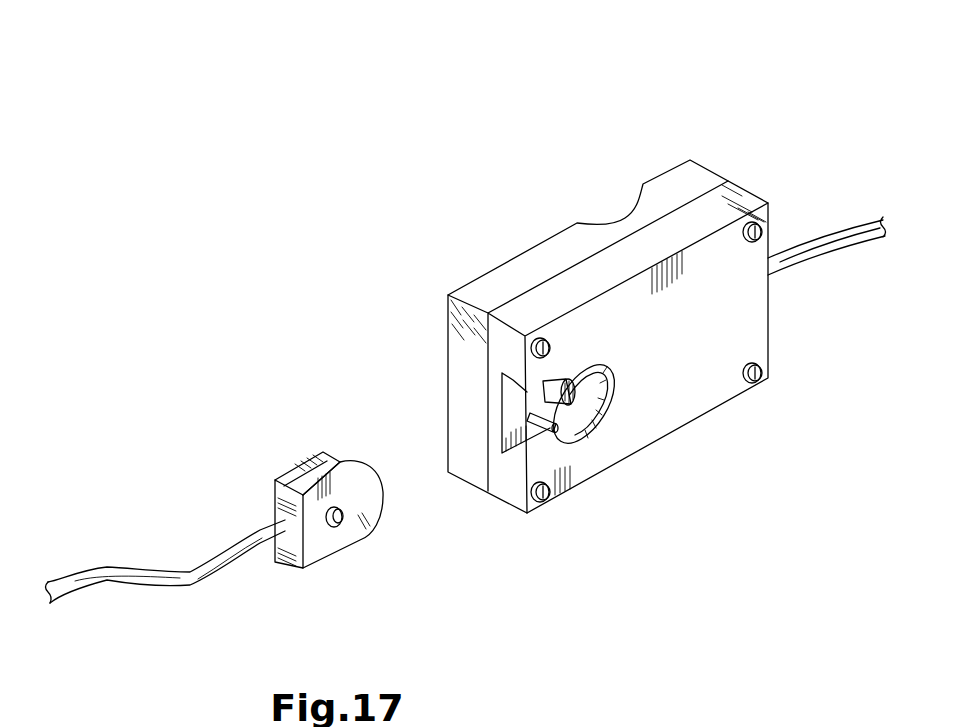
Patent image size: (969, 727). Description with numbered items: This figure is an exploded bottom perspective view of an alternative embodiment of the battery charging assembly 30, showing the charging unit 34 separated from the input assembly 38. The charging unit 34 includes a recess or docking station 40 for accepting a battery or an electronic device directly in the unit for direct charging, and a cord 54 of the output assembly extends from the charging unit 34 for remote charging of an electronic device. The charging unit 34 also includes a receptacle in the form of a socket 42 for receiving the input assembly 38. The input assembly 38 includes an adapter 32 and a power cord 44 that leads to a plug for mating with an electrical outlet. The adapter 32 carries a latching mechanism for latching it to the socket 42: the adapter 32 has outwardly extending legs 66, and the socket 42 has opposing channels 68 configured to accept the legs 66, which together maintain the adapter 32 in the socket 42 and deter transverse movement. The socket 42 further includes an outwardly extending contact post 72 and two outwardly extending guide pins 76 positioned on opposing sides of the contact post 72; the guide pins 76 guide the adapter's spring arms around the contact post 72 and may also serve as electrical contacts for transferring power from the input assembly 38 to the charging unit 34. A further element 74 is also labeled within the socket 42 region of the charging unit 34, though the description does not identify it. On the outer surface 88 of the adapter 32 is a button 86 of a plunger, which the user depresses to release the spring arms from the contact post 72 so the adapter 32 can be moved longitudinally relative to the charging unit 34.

The battery charging assembly 30 is at (622, 88).
The adapter 32 is at (362, 500).
The charging unit 34 is at (697, 384).
The input assembly 38 is at (213, 620).
The docking station 40 is at (623, 196).
The socket 42 is at (520, 408).
The power cord 44 is at (133, 563).
The cord 54 is at (813, 242).
The legs 66 is at (293, 468).
The channels 68 is at (528, 390).
The contact post 72 is at (565, 400).
The sensing element 74 is at (530, 400).
The guide pins 76 is at (556, 432).
The button 86 is at (338, 524).
The outer surface 88 is at (315, 549).